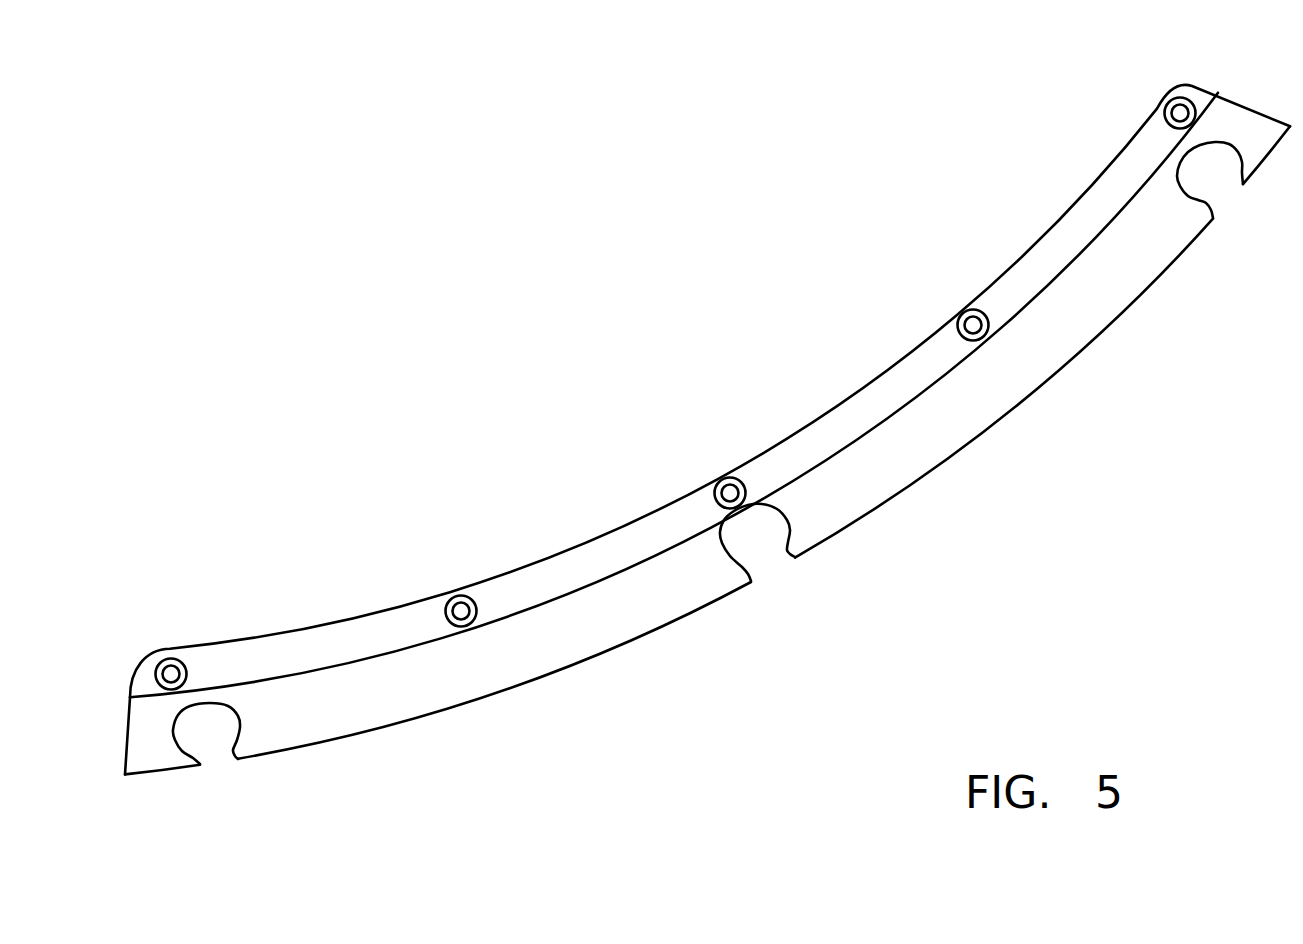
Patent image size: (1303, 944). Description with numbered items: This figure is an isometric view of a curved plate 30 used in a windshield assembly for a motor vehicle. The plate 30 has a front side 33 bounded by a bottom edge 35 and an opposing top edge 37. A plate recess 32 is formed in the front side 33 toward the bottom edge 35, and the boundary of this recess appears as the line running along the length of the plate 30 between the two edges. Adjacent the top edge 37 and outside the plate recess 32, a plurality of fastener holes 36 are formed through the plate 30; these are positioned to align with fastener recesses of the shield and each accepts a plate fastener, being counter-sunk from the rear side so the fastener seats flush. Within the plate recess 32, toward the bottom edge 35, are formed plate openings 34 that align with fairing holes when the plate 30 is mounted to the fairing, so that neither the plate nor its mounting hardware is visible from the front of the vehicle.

The plate 30 is at (707, 447).
The plate recess 32 is at (987, 383).
The front side 33 is at (147, 752).
The plate opening 34 is at (240, 708).
The bottom edge 35 is at (588, 665).
The fastener hole 36 is at (475, 598).
The top edge 37 is at (855, 393).